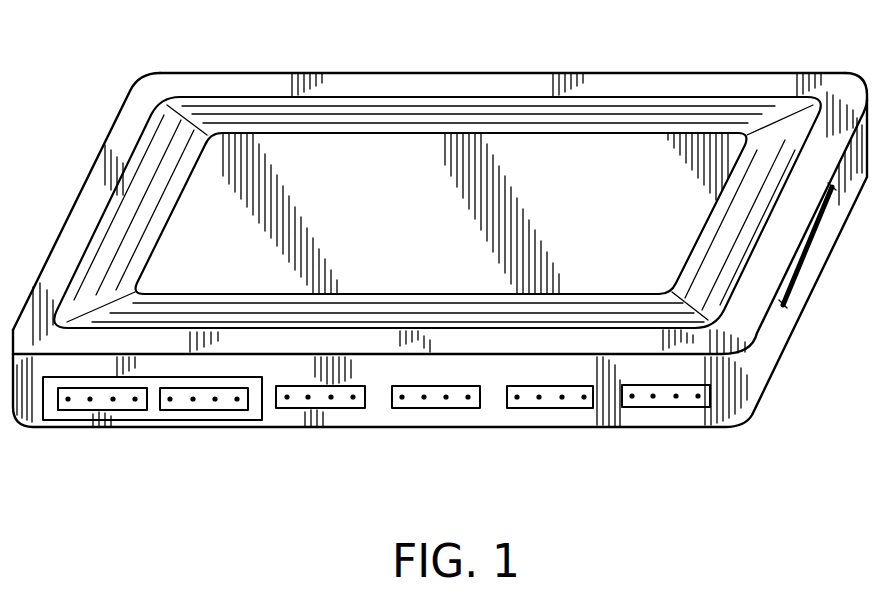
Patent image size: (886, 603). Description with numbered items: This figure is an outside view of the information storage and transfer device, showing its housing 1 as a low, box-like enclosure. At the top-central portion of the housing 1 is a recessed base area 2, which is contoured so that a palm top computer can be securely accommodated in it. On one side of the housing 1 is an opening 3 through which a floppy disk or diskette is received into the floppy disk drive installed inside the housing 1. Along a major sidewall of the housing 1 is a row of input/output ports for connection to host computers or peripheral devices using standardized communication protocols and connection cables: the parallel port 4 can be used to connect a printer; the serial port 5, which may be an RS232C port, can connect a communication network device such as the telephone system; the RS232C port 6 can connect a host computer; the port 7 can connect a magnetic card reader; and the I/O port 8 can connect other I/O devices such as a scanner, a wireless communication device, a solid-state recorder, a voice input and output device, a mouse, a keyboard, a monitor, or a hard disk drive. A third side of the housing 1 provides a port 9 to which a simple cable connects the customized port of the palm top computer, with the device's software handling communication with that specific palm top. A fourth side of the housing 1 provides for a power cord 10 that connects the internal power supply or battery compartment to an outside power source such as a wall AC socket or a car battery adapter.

The housing 1 is at (843, 90).
The recessed base area 2 is at (613, 145).
The opening 3 is at (806, 237).
The parallel port 4 is at (662, 407).
The serial port 5 is at (544, 408).
The RS232C port 6 is at (432, 408).
The port 7 is at (302, 408).
The I/O port 8 is at (147, 420).
The port 9 is at (76, 201).
The power cord 10 is at (447, 72).